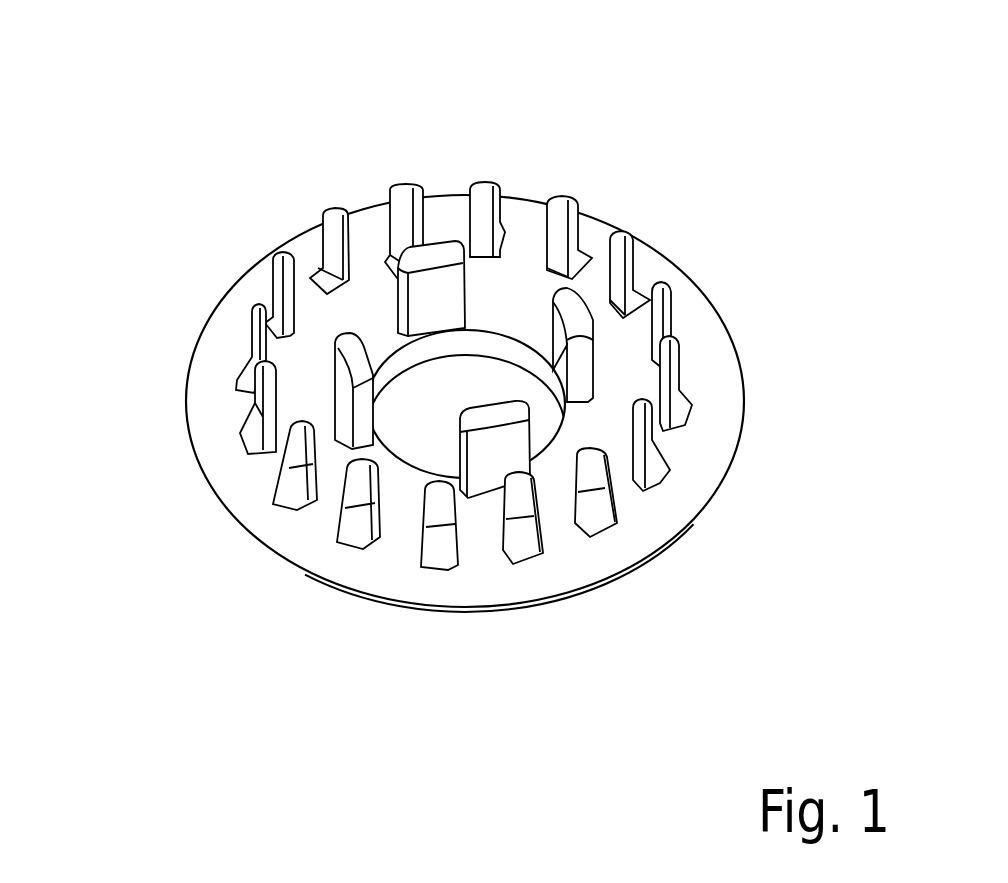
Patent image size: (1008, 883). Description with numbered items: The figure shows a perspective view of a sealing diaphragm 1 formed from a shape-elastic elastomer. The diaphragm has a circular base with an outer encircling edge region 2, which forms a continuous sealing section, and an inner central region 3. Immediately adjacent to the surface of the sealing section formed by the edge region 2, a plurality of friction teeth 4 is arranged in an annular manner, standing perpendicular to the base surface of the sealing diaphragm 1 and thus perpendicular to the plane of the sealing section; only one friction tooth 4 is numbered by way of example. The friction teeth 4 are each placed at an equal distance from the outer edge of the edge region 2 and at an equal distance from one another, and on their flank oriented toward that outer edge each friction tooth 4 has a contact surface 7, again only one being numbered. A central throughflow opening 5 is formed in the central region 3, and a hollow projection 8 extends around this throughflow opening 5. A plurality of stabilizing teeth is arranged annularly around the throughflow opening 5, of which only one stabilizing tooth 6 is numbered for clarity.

The sealing diaphragm 1 is at (297, 243).
The edge region 2 is at (225, 347).
The central region 3 is at (377, 333).
The friction tooth 4 is at (418, 178).
The throughflow opening 5 is at (477, 380).
The stabilizing tooth 6 is at (583, 300).
The contact surface 7 is at (522, 498).
The hollow projection 8 is at (438, 347).